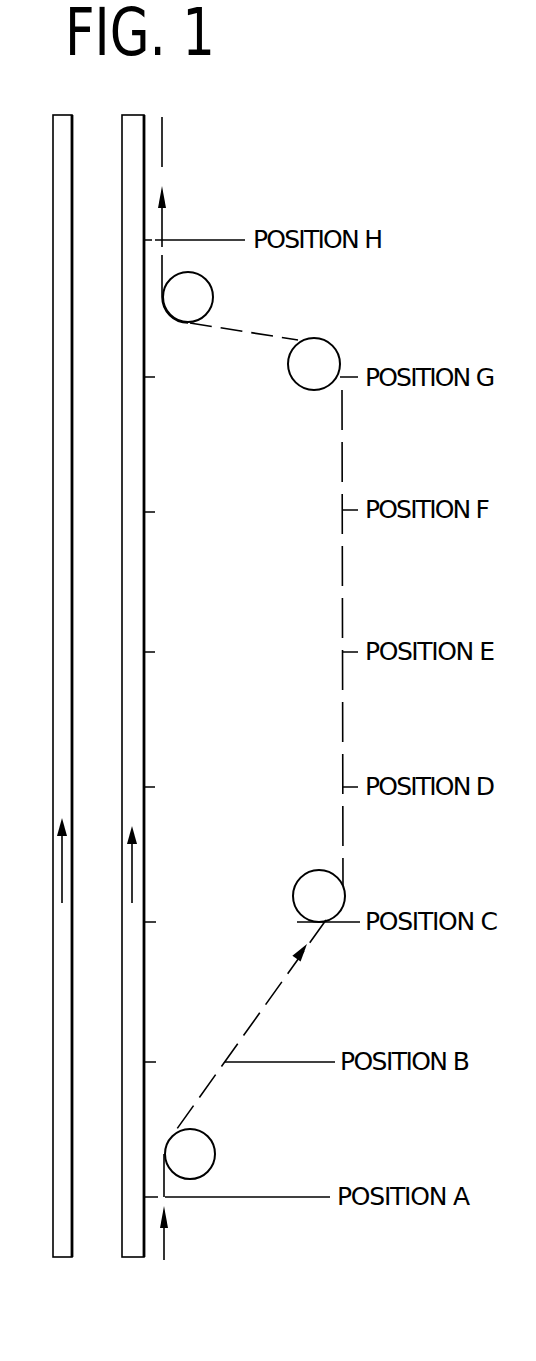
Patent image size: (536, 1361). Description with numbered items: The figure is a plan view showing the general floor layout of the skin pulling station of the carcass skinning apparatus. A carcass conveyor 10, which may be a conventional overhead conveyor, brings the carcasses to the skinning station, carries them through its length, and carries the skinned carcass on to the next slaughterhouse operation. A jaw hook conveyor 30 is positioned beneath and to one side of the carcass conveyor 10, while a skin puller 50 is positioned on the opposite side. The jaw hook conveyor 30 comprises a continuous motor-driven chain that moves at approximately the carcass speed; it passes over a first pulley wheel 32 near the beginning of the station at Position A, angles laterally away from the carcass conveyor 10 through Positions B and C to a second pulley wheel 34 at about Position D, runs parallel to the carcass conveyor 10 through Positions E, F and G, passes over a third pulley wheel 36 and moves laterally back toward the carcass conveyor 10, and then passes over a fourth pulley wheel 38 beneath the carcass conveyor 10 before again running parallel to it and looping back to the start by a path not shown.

The carcass conveyor 10 is at (131, 613).
The skin puller 50 is at (56, 509).
The jaw hook conveyor 30 is at (208, 1085).
The first pulley wheel 32 is at (196, 1160).
The second pulley wheel 34 is at (329, 899).
The third pulley wheel 36 is at (315, 356).
The fourth pulley wheel 38 is at (195, 300).